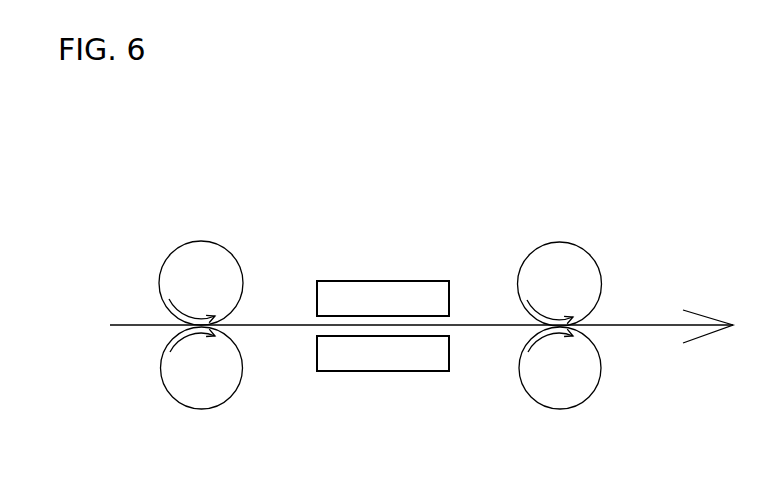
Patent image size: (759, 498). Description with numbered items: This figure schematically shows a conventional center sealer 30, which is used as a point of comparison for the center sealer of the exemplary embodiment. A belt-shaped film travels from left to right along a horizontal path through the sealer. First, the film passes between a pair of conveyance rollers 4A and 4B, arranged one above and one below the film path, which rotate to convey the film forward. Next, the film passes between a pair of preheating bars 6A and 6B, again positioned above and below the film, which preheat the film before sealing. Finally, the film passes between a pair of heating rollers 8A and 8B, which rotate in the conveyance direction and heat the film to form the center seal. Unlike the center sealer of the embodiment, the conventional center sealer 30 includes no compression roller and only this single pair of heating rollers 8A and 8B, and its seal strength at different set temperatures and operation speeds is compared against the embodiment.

The conventional center sealer 30 is at (245, 197).
The conveyance roller 4A is at (180, 263).
The conveyance roller 4B is at (180, 383).
The preheating bar 6A is at (415, 288).
The preheating bar 6B is at (385, 365).
The heating roller 8A is at (597, 287).
The heating roller 8B is at (560, 400).